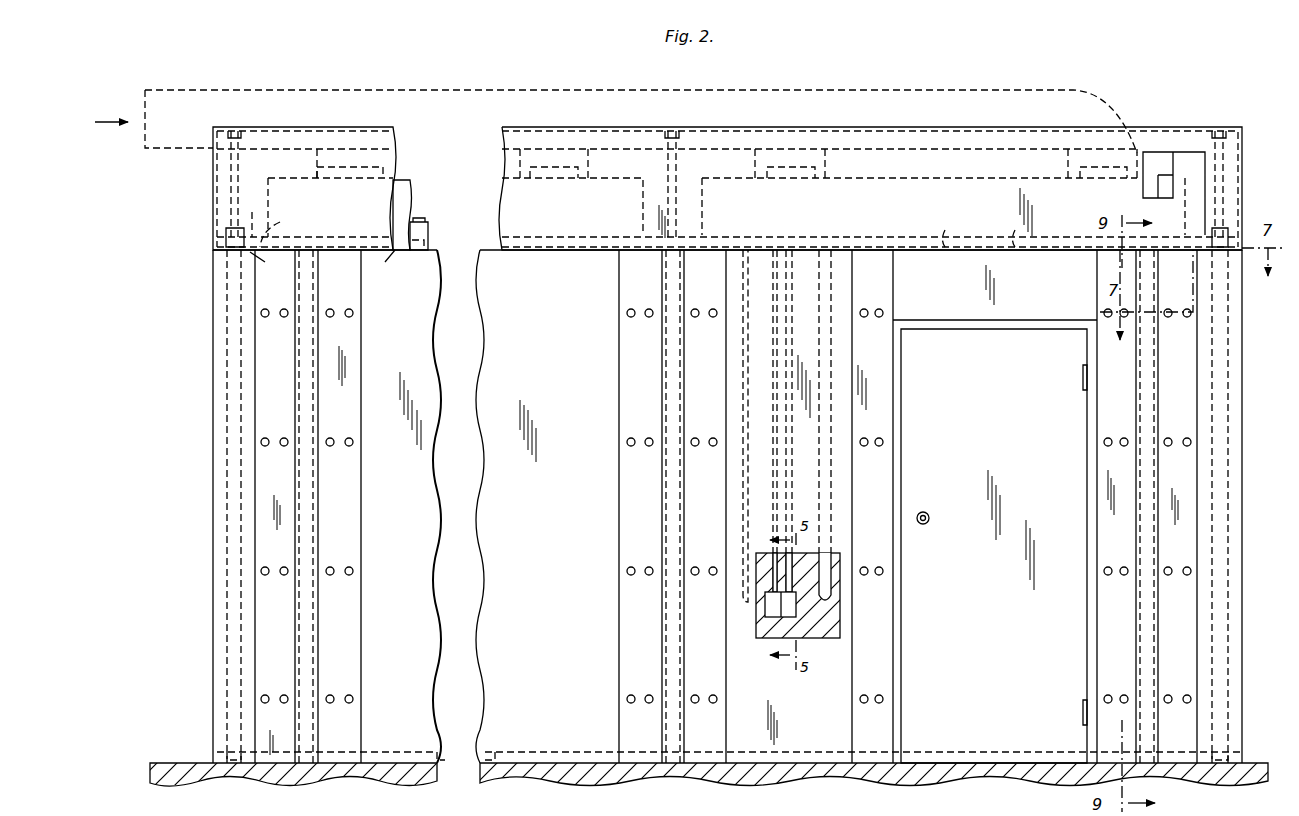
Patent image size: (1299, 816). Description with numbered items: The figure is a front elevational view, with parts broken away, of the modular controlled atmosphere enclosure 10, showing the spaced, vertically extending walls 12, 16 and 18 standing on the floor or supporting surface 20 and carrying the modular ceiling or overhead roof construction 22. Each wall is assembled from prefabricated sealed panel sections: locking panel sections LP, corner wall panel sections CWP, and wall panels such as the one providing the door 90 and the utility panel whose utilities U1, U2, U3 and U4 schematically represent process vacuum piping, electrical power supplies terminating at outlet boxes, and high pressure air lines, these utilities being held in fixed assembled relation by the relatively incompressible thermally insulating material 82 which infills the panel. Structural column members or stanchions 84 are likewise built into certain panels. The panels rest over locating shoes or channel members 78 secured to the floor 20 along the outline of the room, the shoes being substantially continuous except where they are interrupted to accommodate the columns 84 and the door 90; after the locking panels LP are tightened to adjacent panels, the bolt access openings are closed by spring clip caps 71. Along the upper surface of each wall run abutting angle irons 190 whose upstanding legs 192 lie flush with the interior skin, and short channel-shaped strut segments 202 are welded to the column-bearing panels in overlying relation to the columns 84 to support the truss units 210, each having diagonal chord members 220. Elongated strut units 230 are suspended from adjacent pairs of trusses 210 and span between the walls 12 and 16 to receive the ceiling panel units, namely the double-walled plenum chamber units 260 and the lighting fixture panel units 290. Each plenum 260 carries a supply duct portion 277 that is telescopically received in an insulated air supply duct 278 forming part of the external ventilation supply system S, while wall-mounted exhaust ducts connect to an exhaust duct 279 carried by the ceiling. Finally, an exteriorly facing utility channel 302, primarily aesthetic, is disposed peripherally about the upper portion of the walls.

The modular controlled atmosphere enclosure 10 is at (1205, 74).
The wall 12 is at (210, 458).
The wall 16 is at (1246, 460).
The wall 18 is at (480, 502).
The floor 20 is at (156, 766).
The modular ceiling 22 is at (835, 118).
The spring clip cap 71 is at (283, 309).
The locating shoe 78 is at (228, 758).
The thermally insulating material 82 is at (832, 630).
The structural column member 84 is at (302, 394).
The door 90 is at (995, 506).
The angle iron 190 is at (943, 234).
The upstanding leg 192 is at (1015, 236).
The strut segment 202 is at (228, 244).
The support truss unit 210 is at (236, 126).
The chord member 220 is at (230, 208).
The strut unit 230 is at (252, 222).
The plenum chamber unit 260 is at (408, 196).
The supply duct portion 277 is at (352, 180).
The air supply duct 278 is at (317, 160).
The exhaust duct 279 is at (1160, 160).
The lighting fixture panel unit 290 is at (426, 222).
The utility channel 302 is at (222, 186).
The external ventilation supply system S is at (500, 98).
The corner wall panel section CWP is at (224, 544).
The locking panel section LP is at (270, 614).
The utility U1 is at (832, 502).
The utility U2 is at (800, 607).
The utility U3 is at (770, 607).
The utility U4 is at (742, 500).